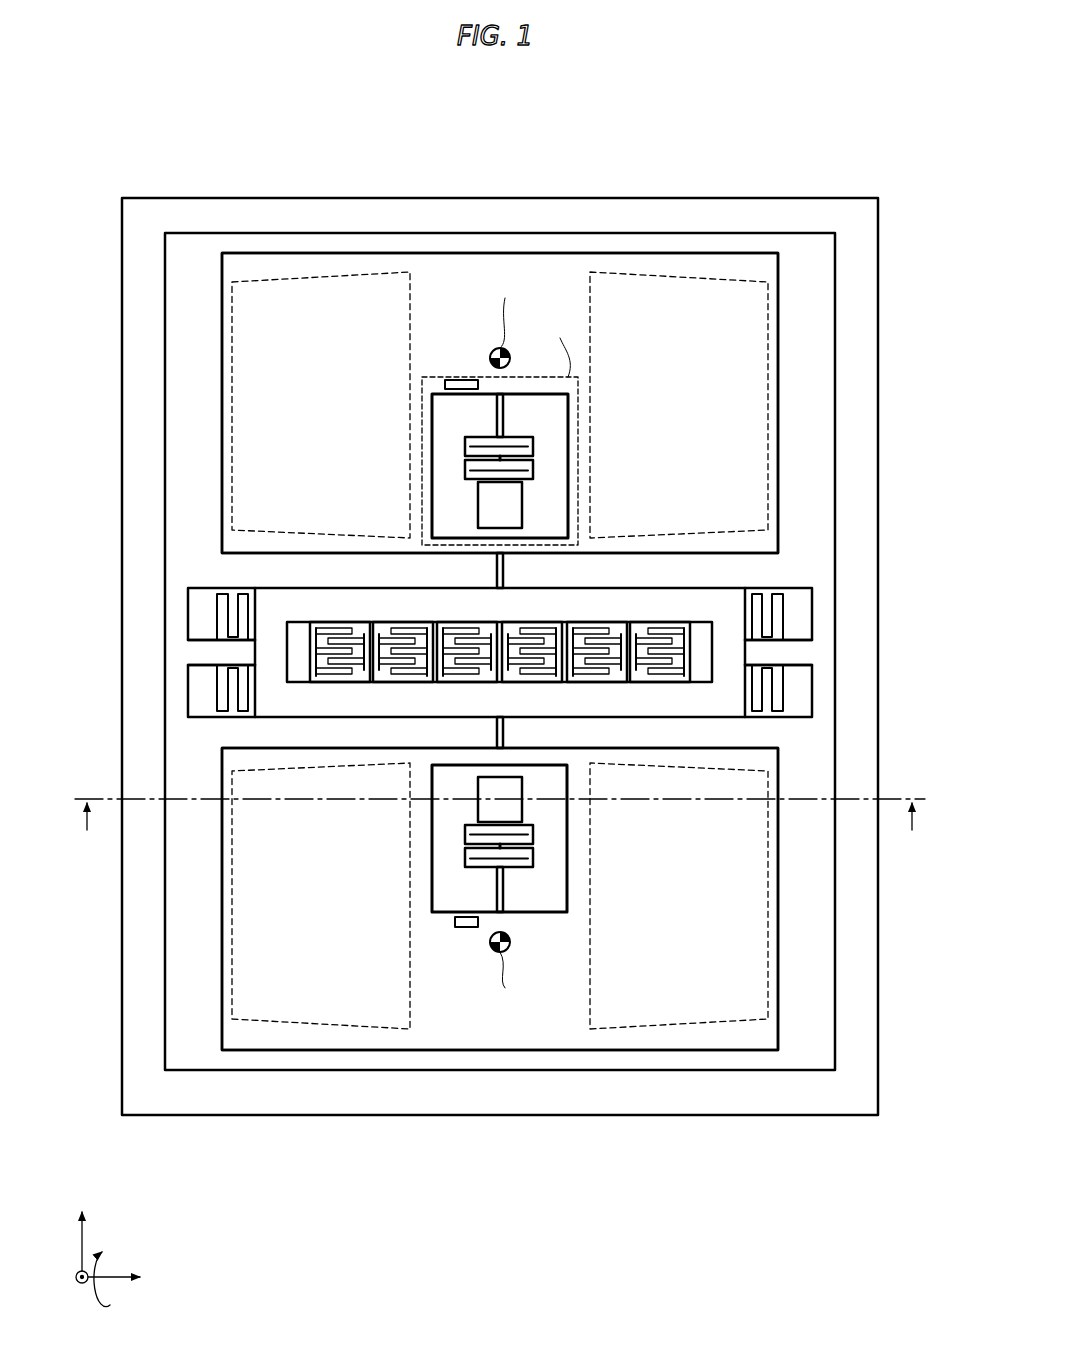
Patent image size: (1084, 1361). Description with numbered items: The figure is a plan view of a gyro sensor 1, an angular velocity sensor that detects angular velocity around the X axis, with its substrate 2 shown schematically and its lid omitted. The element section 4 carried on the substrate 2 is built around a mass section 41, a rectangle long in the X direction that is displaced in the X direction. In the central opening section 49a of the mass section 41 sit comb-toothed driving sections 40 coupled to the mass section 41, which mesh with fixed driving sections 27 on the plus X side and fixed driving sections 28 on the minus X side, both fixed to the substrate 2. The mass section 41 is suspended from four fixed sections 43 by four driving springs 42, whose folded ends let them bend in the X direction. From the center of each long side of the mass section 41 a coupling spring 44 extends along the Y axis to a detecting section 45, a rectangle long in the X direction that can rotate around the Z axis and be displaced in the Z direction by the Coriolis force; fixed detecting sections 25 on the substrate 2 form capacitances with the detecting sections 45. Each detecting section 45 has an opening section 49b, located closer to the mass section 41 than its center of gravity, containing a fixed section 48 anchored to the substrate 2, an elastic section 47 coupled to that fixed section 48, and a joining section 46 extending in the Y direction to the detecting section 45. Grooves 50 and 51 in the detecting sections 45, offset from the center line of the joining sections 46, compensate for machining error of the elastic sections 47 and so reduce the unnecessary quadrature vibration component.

The gyro sensor 1 is at (898, 148).
The substrate 2 is at (878, 250).
The element section 4 is at (753, 248).
The fixed detecting section 25 is at (232, 322).
The fixed driving section 27 is at (398, 622).
The fixed driving section 28 is at (330, 624).
The driving section 40 is at (360, 624).
The mass section 41 is at (735, 588).
The driving spring 42 is at (770, 642).
The fixed section 43 is at (800, 605).
The coupling spring 44 is at (497, 572).
The detecting section 45 is at (683, 253).
The joining section 46 is at (503, 418).
The elastic section 47 is at (533, 447).
The fixed section 48 is at (522, 514).
The opening section 49a is at (287, 635).
The opening section 49b is at (432, 420).
The groove 50 is at (463, 380).
The groove 51 is at (462, 928).